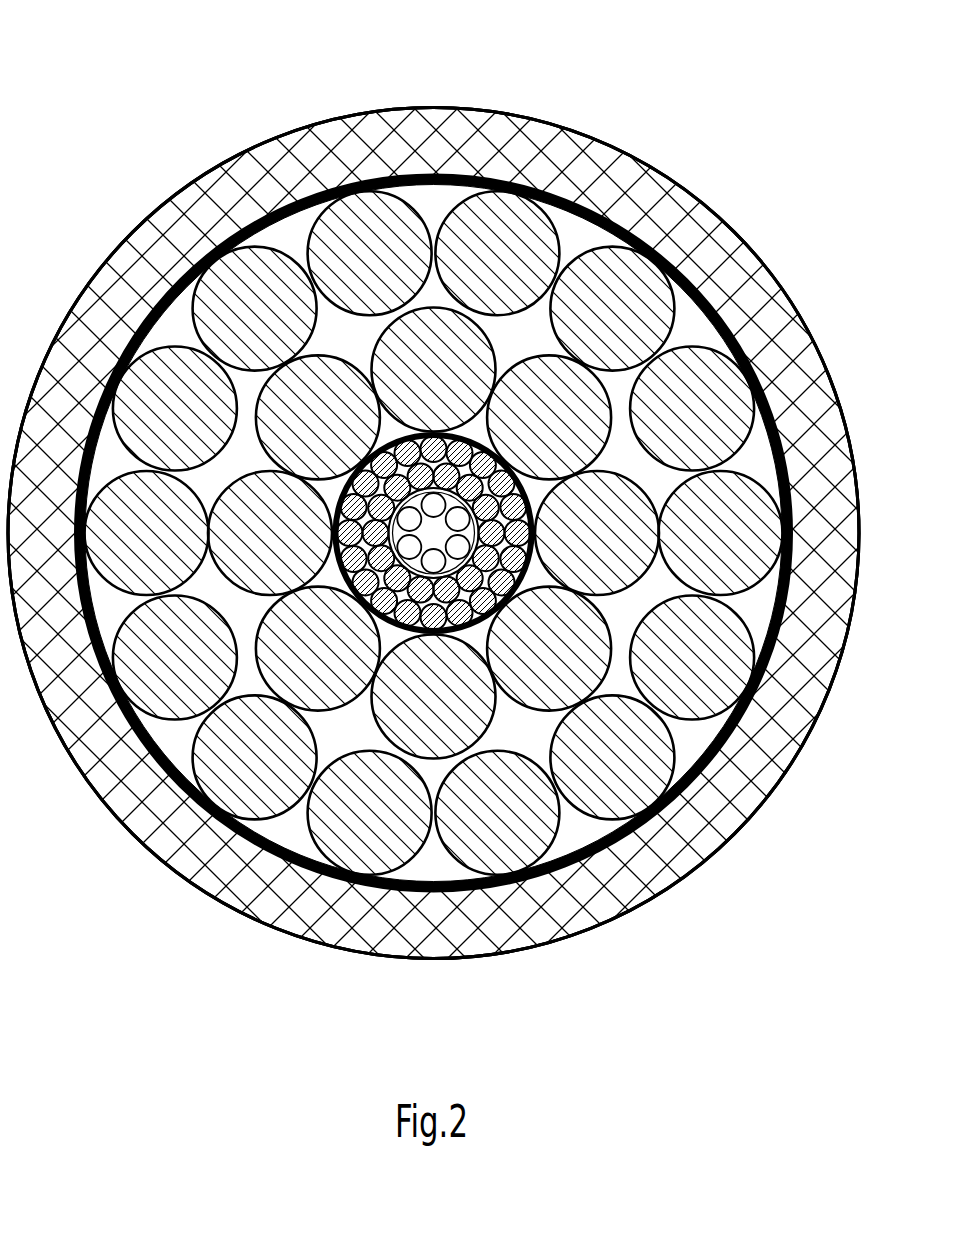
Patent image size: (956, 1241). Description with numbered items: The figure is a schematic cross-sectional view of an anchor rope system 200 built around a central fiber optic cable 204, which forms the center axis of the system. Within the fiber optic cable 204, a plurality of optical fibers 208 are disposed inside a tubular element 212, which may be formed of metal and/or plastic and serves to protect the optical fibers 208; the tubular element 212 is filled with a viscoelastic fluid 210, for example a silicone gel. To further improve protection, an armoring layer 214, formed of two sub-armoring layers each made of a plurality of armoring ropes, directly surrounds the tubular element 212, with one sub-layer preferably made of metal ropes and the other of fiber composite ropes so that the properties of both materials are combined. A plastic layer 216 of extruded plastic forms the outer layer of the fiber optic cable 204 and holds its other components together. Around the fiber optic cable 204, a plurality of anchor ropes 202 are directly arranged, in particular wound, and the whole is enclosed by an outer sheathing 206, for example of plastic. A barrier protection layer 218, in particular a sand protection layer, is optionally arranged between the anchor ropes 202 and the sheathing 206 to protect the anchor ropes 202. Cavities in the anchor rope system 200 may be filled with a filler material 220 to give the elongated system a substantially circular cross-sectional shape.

The anchor rope system 200 is at (110, 78).
The anchor ropes 202 is at (238, 780).
The fiber optic cable 204 is at (368, 644).
The outer sheathing 206 is at (657, 868).
The optical fibers 208 is at (727, 221).
The viscoelastic fluid 210 is at (436, 530).
The tubular element 212 is at (742, 348).
The armoring layer 214 is at (550, 653).
The plastic layer 216 is at (473, 613).
The barrier protection layer 218 is at (100, 790).
The filler material 220 is at (428, 877).